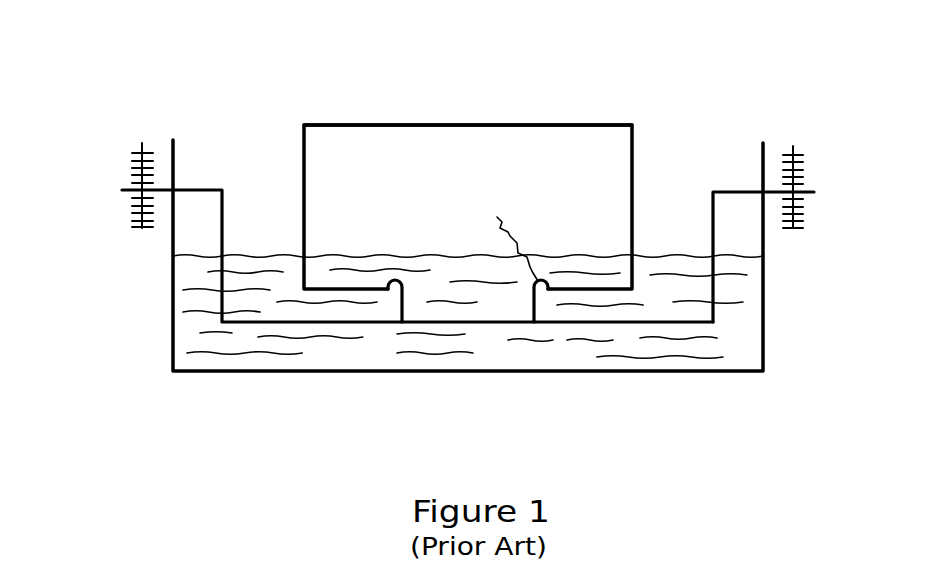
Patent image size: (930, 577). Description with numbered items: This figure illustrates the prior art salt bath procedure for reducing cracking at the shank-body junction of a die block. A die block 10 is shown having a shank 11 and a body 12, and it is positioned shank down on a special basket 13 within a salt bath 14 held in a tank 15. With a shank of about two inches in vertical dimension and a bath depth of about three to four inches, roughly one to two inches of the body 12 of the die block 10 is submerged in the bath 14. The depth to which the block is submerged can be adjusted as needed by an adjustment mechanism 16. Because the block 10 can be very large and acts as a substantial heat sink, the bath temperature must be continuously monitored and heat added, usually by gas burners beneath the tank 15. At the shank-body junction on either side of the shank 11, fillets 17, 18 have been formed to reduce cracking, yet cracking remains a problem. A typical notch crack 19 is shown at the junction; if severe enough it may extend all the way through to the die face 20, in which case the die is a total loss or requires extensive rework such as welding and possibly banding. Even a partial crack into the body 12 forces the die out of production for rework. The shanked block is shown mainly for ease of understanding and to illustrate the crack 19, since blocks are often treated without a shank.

The die block 10 is at (340, 73).
The shank 11 is at (495, 295).
The body 12 is at (518, 154).
The special basket 13 is at (210, 189).
The salt bath 14 is at (740, 325).
The tank 15 is at (172, 337).
The adjustment mechanism 16 is at (137, 165).
The fillet 17 is at (397, 288).
The fillet 18 is at (540, 290).
The notch crack 19 is at (512, 232).
The die face 20 is at (390, 124).